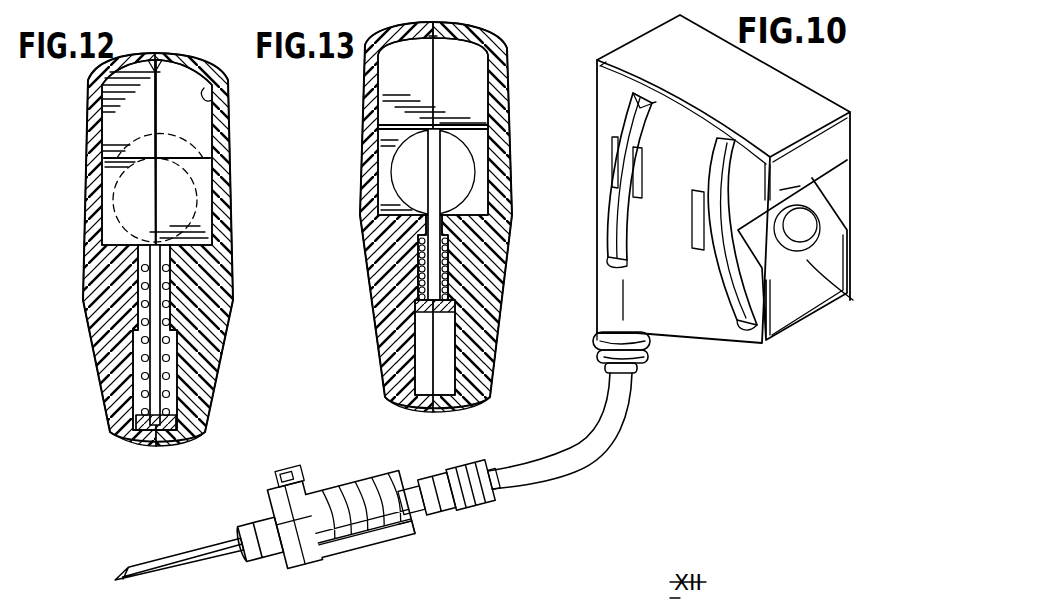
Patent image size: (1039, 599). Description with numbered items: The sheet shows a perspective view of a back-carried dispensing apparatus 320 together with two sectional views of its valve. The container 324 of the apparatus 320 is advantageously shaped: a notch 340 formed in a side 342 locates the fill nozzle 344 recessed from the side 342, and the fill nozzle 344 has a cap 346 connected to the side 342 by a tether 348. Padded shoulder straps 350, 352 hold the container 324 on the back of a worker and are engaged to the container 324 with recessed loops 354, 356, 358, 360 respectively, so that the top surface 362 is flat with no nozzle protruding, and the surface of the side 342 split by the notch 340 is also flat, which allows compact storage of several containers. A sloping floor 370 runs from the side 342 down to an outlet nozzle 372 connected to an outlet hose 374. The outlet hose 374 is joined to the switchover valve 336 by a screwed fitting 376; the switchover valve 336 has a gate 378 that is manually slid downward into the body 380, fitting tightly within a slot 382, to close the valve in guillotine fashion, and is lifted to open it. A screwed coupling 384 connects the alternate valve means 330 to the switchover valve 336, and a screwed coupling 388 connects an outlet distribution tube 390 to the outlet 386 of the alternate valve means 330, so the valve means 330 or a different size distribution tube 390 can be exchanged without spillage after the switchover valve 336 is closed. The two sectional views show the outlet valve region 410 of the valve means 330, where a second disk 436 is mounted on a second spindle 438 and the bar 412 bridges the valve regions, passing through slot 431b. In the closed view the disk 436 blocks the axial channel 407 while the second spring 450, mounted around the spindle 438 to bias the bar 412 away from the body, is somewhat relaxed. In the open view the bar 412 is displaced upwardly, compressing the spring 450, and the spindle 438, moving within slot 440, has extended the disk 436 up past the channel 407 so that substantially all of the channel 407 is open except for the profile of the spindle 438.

In FIG. 10, the blood sampling assembly 320 is at (620, 441).
In FIG. 10, the container 324 is at (790, 99).
In FIG. 10, the alternate valve means 330 is at (365, 558).
In FIG. 10, the switchover valve 336 is at (493, 507).
In FIG. 10, the notch 340 is at (810, 182).
In FIG. 10, the side 342 is at (820, 177).
In FIG. 10, the fill nozzle 344 is at (790, 250).
In FIG. 10, the cap 346 is at (805, 240).
In FIG. 10, the tether 348 is at (853, 302).
In FIG. 10, the padded shoulder strap 350 is at (632, 124).
In FIG. 10, the padded shoulder strap 352 is at (716, 165).
In FIG. 10, the recessed loop 354 is at (642, 150).
In FIG. 10, the recessed loop 356 is at (735, 152).
In FIG. 10, the recessed loop 358 is at (627, 265).
In FIG. 10, the recessed loop 360 is at (740, 322).
In FIG. 10, the top surface 362 is at (635, 48).
In FIG. 10, the sloping floor 370 is at (683, 342).
In FIG. 10, the outlet nozzle 372 is at (596, 348).
In FIG. 10, the outlet hose 374 is at (578, 456).
In FIG. 10, the screwed fitting 376 is at (486, 466).
In FIG. 10, the gate 378 is at (458, 462).
In FIG. 10, the body 380 is at (465, 500).
In FIG. 10, the slot 382 is at (480, 498).
In FIG. 10, the screwed coupling 384 is at (447, 515).
In FIG. 10, the outlet 386 is at (289, 498).
In FIG. 10, the screwed coupling 388 is at (258, 507).
In FIG. 10, the outlet distribution tube 390 is at (195, 548).
In FIG. 12, the axial channel 407 is at (214, 165).
In FIG. 13, the axial channel 407 is at (388, 166).
In FIG. 12, the outlet valve region 410 is at (172, 55).
In FIG. 12, the bar 412 is at (159, 431).
In FIG. 13, the bar 412 is at (457, 307).
In FIG. 12, the slot 431b is at (178, 376).
In FIG. 13, the slot 431b is at (458, 357).
In FIG. 12, the second disk 436 is at (103, 133).
In FIG. 13, the second disk 436 is at (460, 66).
In FIG. 12, the second spindle 438 is at (160, 330).
In FIG. 13, the second spindle 438 is at (436, 165).
In FIG. 12, the slot 440 is at (208, 90).
In FIG. 12, the second spring 450 is at (172, 280).
In FIG. 13, the second spring 450 is at (450, 260).